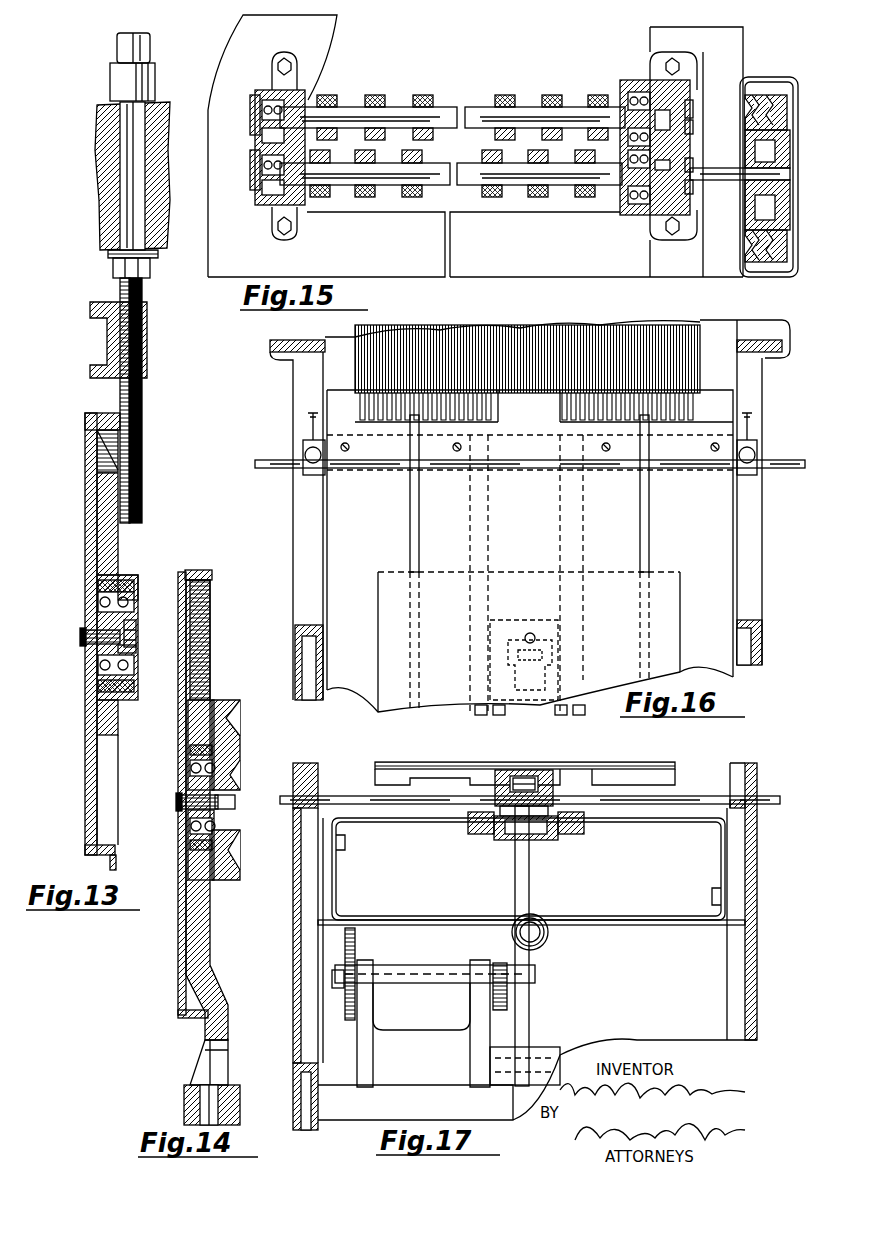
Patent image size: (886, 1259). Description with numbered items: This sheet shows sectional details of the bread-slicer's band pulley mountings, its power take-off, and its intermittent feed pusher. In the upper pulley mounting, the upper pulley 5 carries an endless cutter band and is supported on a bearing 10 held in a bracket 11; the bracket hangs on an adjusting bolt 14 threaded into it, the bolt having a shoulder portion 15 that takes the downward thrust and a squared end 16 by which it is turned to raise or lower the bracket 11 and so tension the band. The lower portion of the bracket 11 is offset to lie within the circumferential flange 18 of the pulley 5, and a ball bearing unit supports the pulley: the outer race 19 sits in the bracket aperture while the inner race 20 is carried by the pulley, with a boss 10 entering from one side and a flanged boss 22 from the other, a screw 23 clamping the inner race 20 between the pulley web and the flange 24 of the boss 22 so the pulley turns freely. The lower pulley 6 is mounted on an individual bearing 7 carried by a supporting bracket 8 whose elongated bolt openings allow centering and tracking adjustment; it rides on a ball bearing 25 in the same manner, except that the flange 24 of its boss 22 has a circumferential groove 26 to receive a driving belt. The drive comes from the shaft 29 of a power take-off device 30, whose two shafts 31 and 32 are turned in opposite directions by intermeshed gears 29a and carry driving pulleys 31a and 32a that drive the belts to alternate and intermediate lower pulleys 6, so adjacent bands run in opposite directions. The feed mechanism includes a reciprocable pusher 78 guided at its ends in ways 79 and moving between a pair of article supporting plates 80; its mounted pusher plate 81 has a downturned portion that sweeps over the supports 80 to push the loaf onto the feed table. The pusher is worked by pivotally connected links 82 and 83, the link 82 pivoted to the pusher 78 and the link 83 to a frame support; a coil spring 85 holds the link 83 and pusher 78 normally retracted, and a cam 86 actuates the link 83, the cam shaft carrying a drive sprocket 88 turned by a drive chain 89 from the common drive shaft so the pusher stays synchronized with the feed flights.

In FIG. 13, the upper pulley 5 is at (88, 476).
In FIG. 14, the lower pulley 6 is at (176, 1016).
In FIG. 14, the bearing 7 is at (178, 812).
In FIG. 14, the supporting bracket 8 is at (212, 945).
In FIG. 13, the bearing / shaft portion or boss 10 is at (92, 648).
In FIG. 13, the bracket 11 is at (120, 552).
In FIG. 13, the adjusting bolt 14 is at (145, 400).
In FIG. 13, the shoulder portion 15 is at (112, 82).
In FIG. 13, the squared end 16 is at (120, 50).
In FIG. 13, the circumferential flange 18 is at (95, 415).
In FIG. 13, the outer race 19 is at (96, 600).
In FIG. 13, the inner race 20 is at (96, 612).
In FIG. 13, the flanged boss 22 is at (132, 653).
In FIG. 14, the flanged boss 22 is at (236, 808).
In FIG. 13, the screw 23 is at (136, 628).
In FIG. 13, the flange 24 is at (138, 582).
In FIG. 14, the flange 24 is at (238, 870).
In FIG. 14, the ball bearing 25 is at (222, 764).
In FIG. 14, the circumferential groove 26 is at (226, 712).
In FIG. 15, the shaft 29 is at (728, 190).
In FIG. 15, the intermeshed gears 29a is at (655, 90).
In FIG. 15, the power take-off device 30 is at (708, 80).
In FIG. 15, the shaft 31 is at (528, 106).
In FIG. 15, the pulleys or driving surfaces 31a is at (340, 98).
In FIG. 15, the shaft 32 is at (565, 186).
In FIG. 15, the pulleys or driving surfaces 32a is at (365, 198).
In FIG. 16, the reciprocable pusher 78 is at (512, 620).
In FIG. 17, the reciprocable pusher 78 is at (500, 770).
In FIG. 17, the ways 79 is at (470, 838).
In FIG. 16, the article supporting plates 80 is at (442, 560).
In FIG. 17, the article supporting plates 80 is at (380, 816).
In FIG. 16, the pusher plate 81 is at (678, 632).
In FIG. 17, the pusher plate 81 is at (418, 764).
In FIG. 17, the link 82 is at (532, 778).
In FIG. 17, the link 83 is at (532, 960).
In FIG. 17, the coil spring 85 is at (548, 922).
In FIG. 17, the cam 86 is at (510, 1010).
In FIG. 17, the drive sprocket 88 is at (348, 1010).
In FIG. 17, the drive chain 89 is at (356, 945).